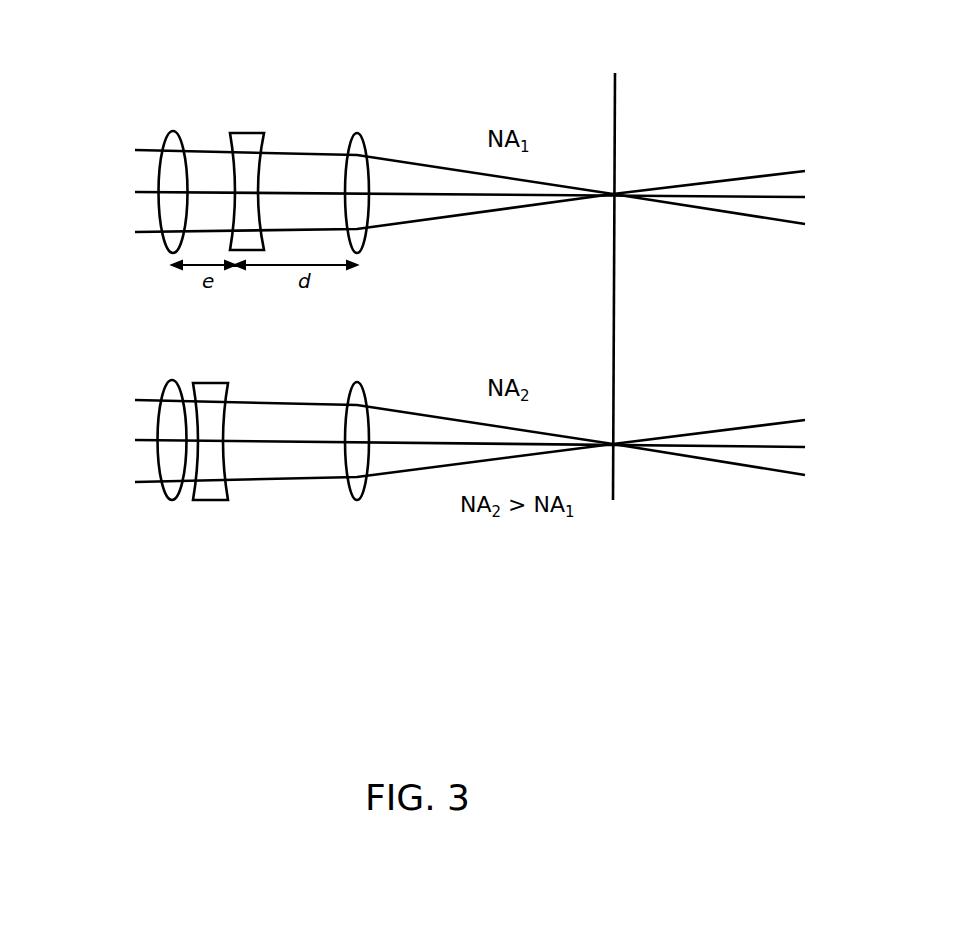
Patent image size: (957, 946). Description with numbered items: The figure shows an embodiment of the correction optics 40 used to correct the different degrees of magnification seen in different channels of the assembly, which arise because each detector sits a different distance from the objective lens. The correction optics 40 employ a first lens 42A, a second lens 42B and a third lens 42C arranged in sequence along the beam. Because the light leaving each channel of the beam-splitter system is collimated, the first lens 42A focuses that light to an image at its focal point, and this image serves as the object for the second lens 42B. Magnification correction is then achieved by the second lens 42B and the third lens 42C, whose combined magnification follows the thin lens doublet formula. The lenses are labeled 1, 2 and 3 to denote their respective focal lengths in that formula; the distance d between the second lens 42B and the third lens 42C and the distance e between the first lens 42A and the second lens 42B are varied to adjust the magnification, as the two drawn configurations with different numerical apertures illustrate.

The correction optics 40 is at (283, 103).
The first lens 42A is at (172, 136).
The second lens 42B is at (240, 131).
The third lens 42C is at (358, 138).
The focal length label of first lens 1 is at (173, 178).
The focal length label of second lens 2 is at (247, 177).
The focal length label of third lens 3 is at (357, 179).